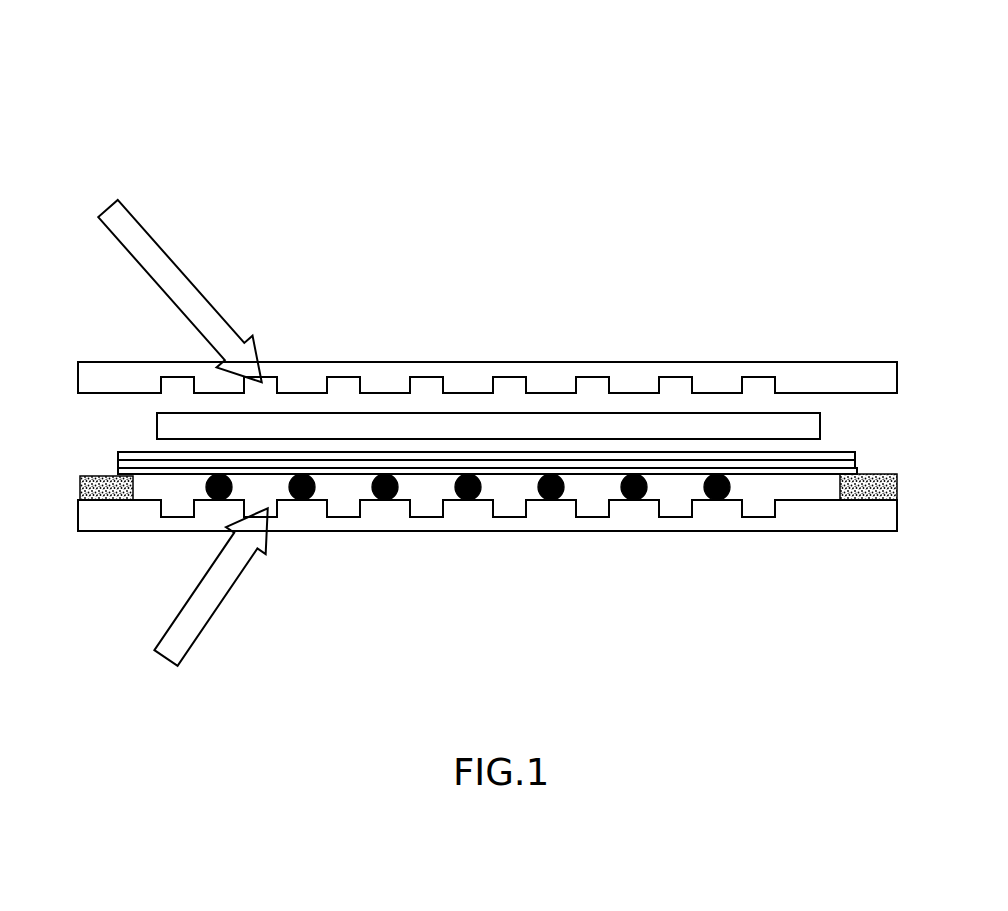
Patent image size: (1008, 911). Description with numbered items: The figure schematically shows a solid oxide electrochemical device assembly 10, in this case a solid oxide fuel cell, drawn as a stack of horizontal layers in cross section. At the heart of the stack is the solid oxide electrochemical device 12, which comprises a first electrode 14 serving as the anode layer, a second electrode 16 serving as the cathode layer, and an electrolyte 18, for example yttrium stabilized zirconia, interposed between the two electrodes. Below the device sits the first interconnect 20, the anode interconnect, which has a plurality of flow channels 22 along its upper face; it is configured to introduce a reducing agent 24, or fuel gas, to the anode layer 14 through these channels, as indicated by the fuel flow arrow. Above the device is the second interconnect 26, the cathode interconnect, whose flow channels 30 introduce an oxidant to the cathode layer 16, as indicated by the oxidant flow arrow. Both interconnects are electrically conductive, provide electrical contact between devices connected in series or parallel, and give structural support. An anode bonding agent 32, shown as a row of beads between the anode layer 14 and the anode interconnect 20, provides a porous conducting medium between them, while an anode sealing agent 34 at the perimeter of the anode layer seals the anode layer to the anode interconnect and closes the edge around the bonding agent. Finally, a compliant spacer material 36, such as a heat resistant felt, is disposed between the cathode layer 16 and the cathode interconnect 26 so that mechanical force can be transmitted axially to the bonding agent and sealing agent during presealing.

The solid oxide electrochemical device assembly 10 is at (282, 55).
The solid oxide electrochemical device 12 is at (106, 439).
The first electrode 14 is at (857, 470).
The second electrode 16 is at (852, 452).
The electrolyte 18 is at (119, 462).
The first interconnect 20 is at (862, 520).
The flow channels 22 is at (760, 505).
The reducing agent 24 is at (216, 611).
The second interconnect 26 is at (848, 366).
The flow channels 30 is at (507, 380).
The anode bonding agent 32 is at (616, 497).
The anode sealing agent 34 is at (80, 495).
The spacer material 36 is at (820, 425).